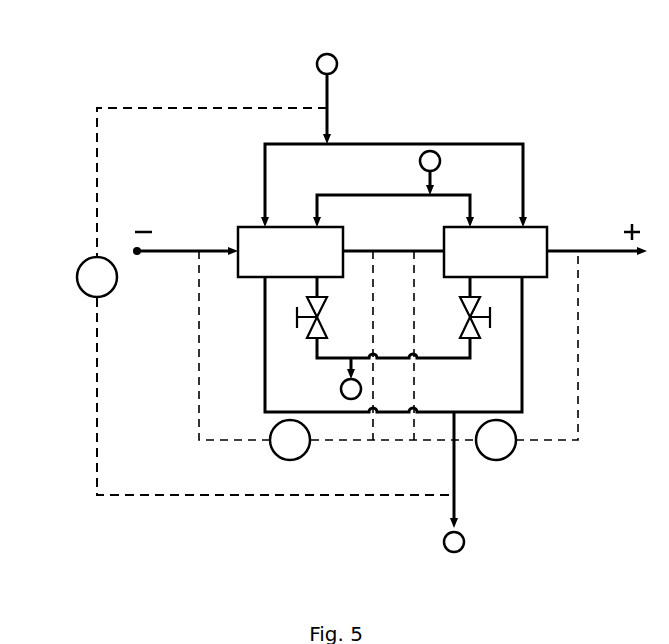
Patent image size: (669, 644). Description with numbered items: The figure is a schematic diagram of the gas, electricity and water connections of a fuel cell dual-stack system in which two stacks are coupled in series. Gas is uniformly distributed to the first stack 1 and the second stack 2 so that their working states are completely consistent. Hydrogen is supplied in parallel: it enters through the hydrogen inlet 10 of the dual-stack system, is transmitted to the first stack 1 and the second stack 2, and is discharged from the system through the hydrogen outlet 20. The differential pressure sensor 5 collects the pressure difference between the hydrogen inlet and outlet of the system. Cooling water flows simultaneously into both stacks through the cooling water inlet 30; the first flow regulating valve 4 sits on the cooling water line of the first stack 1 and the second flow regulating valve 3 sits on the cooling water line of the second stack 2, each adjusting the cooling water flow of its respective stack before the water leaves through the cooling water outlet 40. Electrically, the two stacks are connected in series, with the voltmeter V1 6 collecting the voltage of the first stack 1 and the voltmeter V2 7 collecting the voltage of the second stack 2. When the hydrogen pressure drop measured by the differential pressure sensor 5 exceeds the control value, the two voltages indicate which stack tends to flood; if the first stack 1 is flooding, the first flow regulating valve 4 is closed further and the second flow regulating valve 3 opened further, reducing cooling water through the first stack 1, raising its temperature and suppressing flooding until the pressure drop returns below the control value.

The first stack 1 is at (249, 233).
The second stack 2 is at (533, 234).
The second flow regulating valve 3 is at (483, 332).
The first flow regulating valve 4 is at (307, 333).
The differential pressure sensor 5 is at (92, 287).
The voltmeter V1 6 is at (288, 457).
The voltmeter V2 7 is at (515, 443).
The hydrogen inlet 10 is at (328, 62).
The hydrogen outlet 20 is at (450, 550).
The cooling water inlet 30 is at (430, 160).
The cooling water outlet 40 is at (352, 392).